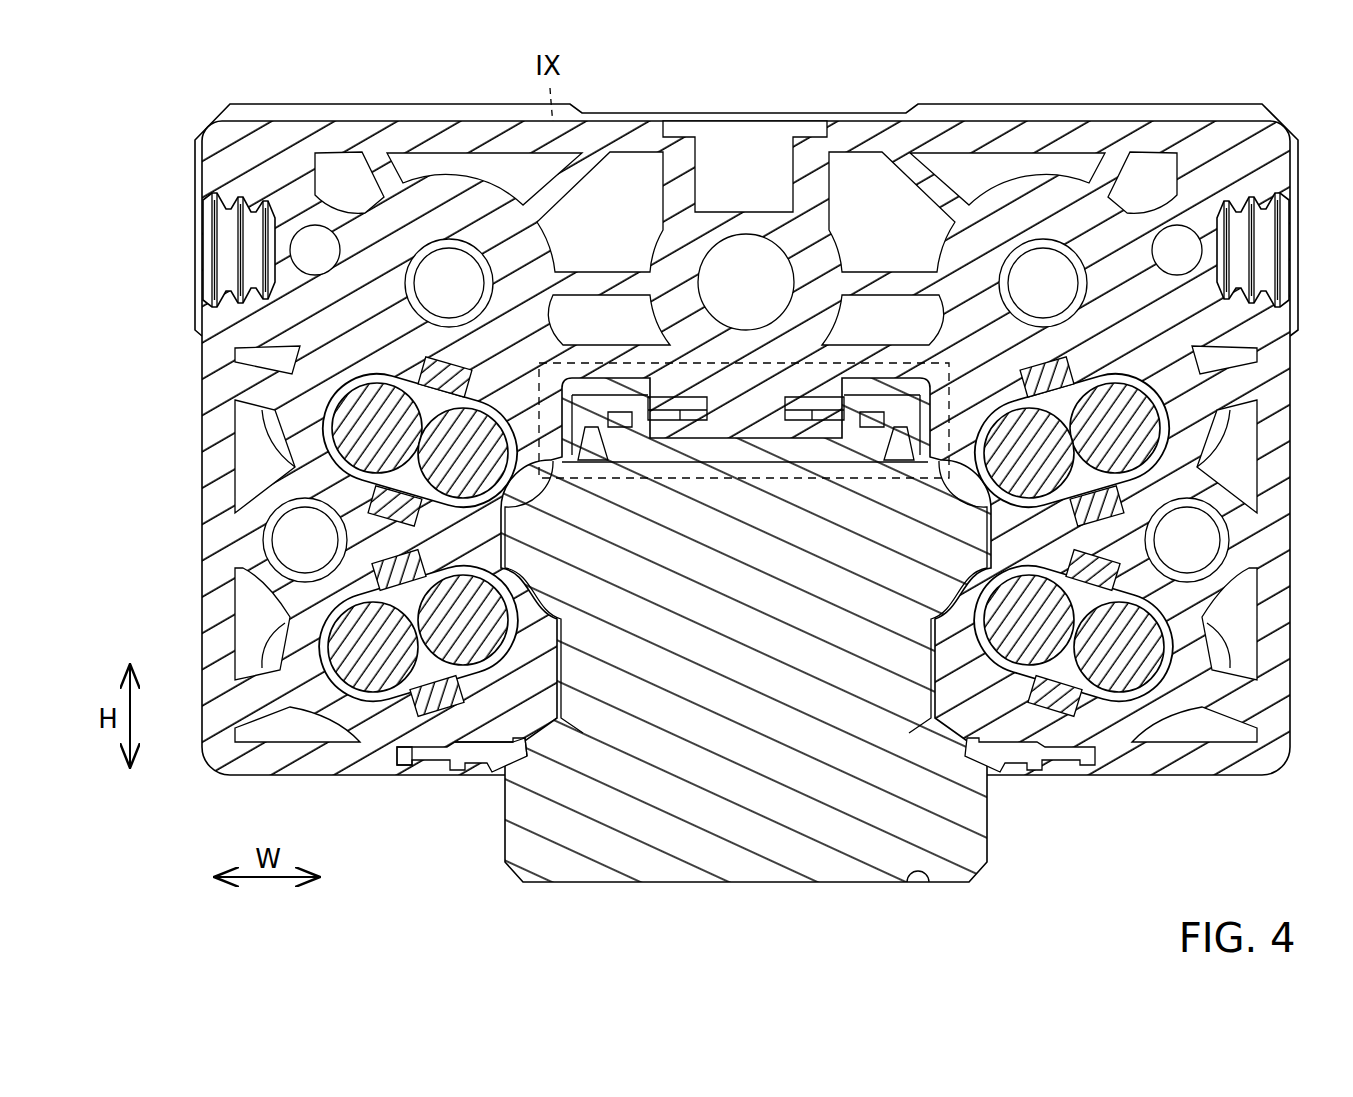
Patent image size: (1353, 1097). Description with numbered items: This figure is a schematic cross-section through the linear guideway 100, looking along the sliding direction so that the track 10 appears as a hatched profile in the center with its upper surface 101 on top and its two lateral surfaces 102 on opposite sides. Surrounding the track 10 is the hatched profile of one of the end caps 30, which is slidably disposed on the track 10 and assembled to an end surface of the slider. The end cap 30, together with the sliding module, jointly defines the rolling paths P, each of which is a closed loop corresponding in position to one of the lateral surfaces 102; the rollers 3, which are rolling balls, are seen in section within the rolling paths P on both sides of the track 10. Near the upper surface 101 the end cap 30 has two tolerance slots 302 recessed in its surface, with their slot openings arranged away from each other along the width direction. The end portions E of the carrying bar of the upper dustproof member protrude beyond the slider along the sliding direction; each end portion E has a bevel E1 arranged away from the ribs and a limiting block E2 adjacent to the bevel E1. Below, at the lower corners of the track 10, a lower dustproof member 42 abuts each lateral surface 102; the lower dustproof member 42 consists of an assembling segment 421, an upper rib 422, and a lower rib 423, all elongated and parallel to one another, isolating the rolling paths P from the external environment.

The linear guideway 100 is at (1258, 82).
The track 10 is at (827, 502).
The upper surface 101 is at (763, 455).
The lateral surfaces 102 is at (955, 733).
The end caps 30 is at (205, 540).
The tolerance slots 302 is at (706, 397).
The rollers 3 is at (345, 437).
The rolling paths P is at (328, 412).
The lower dustproof member 42 is at (732, 853).
The assembling segment 421 is at (435, 766).
The upper rib 422 is at (539, 832).
The lower rib 423 is at (505, 777).
The end portions E is at (880, 398).
The bevel E1 is at (697, 403).
The limiting block E2 is at (638, 428).